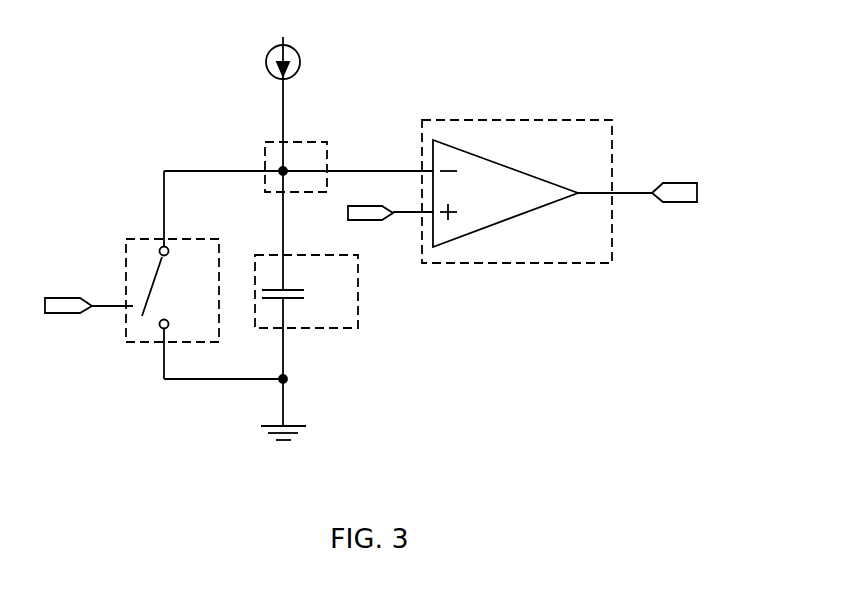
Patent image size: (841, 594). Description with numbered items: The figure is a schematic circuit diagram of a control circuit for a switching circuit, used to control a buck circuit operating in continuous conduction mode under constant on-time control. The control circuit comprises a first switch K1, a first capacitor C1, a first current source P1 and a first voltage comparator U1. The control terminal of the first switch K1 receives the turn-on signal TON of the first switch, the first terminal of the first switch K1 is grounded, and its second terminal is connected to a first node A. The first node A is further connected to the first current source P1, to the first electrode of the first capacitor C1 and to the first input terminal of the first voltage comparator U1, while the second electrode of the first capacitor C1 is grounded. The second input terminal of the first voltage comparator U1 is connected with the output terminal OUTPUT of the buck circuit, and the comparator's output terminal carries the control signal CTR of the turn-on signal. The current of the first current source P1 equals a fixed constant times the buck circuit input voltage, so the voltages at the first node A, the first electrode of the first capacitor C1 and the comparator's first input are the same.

The first current source P1 is at (299, 62).
The first node A is at (296, 167).
The first switch K1 is at (172, 290).
The first capacitor C1 is at (306, 291).
The first voltage comparator U1 is at (520, 118).
The turn-on signal TON is at (87, 293).
The output terminal OUTPUT is at (380, 226).
The control signal CTR is at (675, 178).